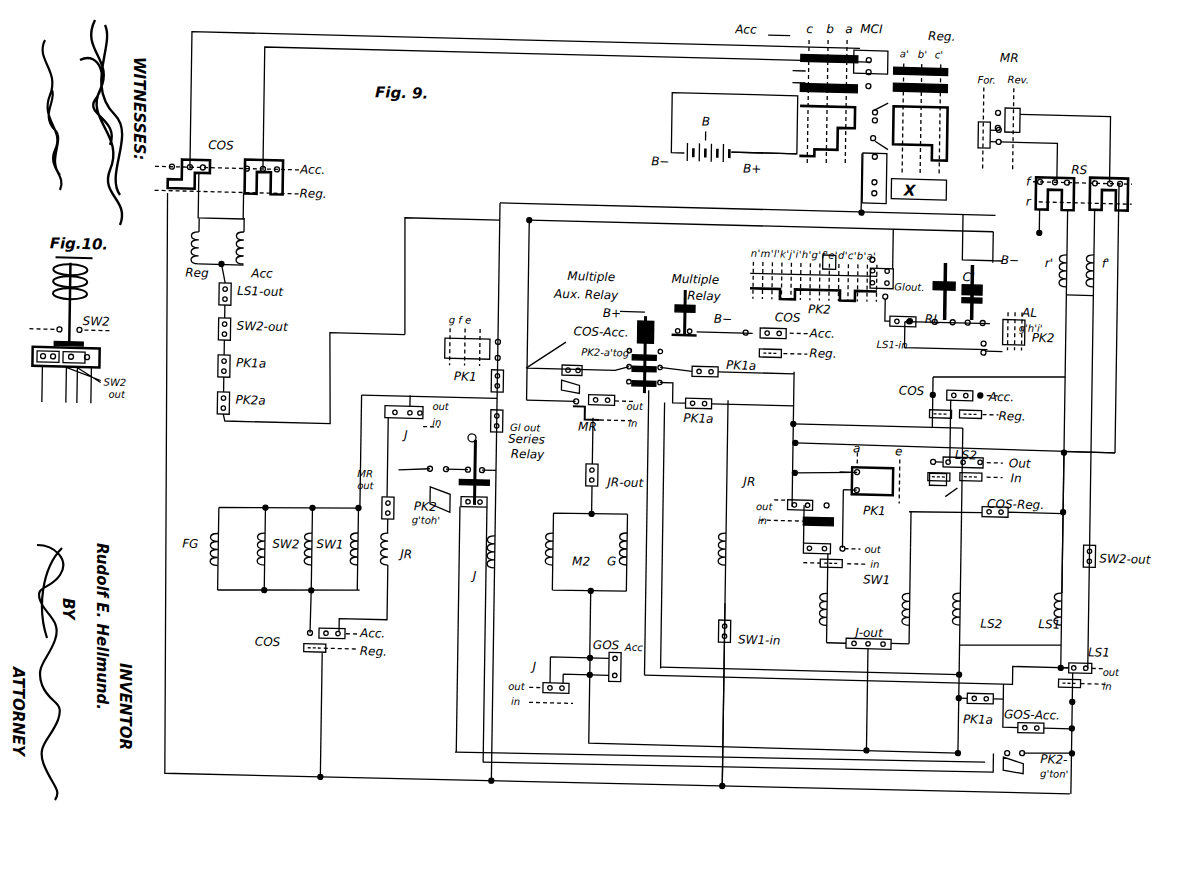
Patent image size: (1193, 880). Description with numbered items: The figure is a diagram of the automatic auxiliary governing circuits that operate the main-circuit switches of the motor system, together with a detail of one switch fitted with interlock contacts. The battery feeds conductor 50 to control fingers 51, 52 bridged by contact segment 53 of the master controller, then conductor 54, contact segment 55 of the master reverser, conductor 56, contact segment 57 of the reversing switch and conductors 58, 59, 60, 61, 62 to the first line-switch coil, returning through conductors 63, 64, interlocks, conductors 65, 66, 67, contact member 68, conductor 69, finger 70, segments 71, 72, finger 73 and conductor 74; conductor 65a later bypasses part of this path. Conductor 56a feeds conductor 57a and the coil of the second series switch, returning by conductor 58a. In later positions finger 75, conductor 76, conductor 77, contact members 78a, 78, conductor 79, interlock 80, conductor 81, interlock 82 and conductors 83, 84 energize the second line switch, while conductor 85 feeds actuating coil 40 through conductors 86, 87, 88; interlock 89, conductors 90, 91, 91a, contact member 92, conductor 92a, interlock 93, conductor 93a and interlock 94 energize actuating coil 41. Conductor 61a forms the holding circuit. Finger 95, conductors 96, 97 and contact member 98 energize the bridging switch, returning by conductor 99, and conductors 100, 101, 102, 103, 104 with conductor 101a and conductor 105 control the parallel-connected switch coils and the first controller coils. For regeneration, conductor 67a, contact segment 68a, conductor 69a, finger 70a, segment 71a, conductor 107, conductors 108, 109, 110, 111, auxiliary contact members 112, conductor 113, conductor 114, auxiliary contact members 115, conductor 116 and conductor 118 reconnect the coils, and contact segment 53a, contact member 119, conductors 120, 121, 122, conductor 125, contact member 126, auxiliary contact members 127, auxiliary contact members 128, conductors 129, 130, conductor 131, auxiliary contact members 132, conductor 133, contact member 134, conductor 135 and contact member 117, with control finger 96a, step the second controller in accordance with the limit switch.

The actuating coil 40 is at (578, 580).
The actuating coil 41 is at (706, 525).
The conductor 50 is at (753, 151).
The control finger 51 is at (869, 117).
The control finger 52 is at (889, 102).
The contact segment 53 is at (827, 131).
The contact segment 53a is at (920, 133).
The conductor 54 is at (972, 112).
The contact segment 55 is at (973, 135).
The conductor 56 is at (1053, 132).
The conductor 56a is at (401, 264).
The contact segment 57 is at (1054, 205).
The conductor 57a is at (373, 452).
The conductor 58 is at (1028, 214).
The conductor 58a is at (326, 723).
The conductor 59 is at (1098, 205).
The conductor 60 is at (1117, 277).
The conductor 61 is at (1064, 467).
The conductor 61a is at (1050, 441).
The conductor 62 is at (1064, 533).
The conductor 63 is at (1022, 632).
The conductor 64 is at (962, 649).
The conductor 65 is at (1078, 741).
The conductor 65a is at (1078, 716).
The negative conductor 66 is at (164, 449).
The conductor 67 is at (236, 220).
The conductor 67a is at (372, 336).
The contact member 68 is at (268, 164).
The contact segment 68a is at (188, 189).
The conductor 69 is at (258, 113).
The conductor 69a is at (184, 85).
The control finger 70 is at (844, 61).
The control finger 70a is at (860, 75).
The contact segment 71 is at (793, 71).
The contact segment 71a is at (942, 68).
The contact segment 72 is at (793, 84).
The control finger 73 is at (835, 94).
The conductor 74 is at (732, 90).
The control finger 75 is at (891, 152).
The conductor 76 is at (892, 220).
The conductor 77 is at (877, 308).
The auxiliary contact members 78 is at (990, 300).
The auxiliary contact members 78a is at (945, 337).
The conductor 79 is at (983, 337).
The interlock 80 is at (931, 392).
The conductor 81 is at (950, 438).
The interlock 82 is at (946, 498).
The conductor 83 is at (955, 500).
The conductor 84 is at (962, 546).
The conductor 85 is at (952, 507).
The conductor 86 is at (871, 714).
The conductor 87 is at (903, 751).
The conductor 88 is at (962, 714).
The interlock 89 is at (930, 482).
The conductor 90 is at (878, 446).
The conductor 91 is at (793, 463).
The conductor 91a is at (841, 467).
The contact member 92 is at (872, 481).
The conductor 92a is at (843, 490).
The interlock 93 is at (835, 516).
The conductor 93a is at (794, 527).
The interlock 94 is at (824, 542).
The control finger 95 is at (874, 178).
The conductor 96 is at (855, 186).
The control finger 96a is at (872, 255).
The conductor 97 is at (691, 194).
The contact member 98 is at (468, 347).
The conductor 99 is at (497, 651).
The conductor 100 is at (792, 417).
The conductor 101 is at (762, 366).
The conductor 101a is at (567, 402).
The conductor 102 is at (595, 451).
The conductor 103 is at (593, 628).
The conductor 104 is at (598, 735).
The conductor 105 is at (795, 471).
The conductor 107 is at (313, 626).
The conductor 108 is at (525, 260).
The conductor 109 is at (578, 363).
The conductor 110 is at (597, 380).
The conductor 111 is at (634, 346).
The auxiliary contact members 112 is at (650, 359).
The conductor 113 is at (694, 334).
The conductor 114 is at (947, 677).
The auxiliary contact members 115 is at (662, 391).
The conductor 116 is at (668, 466).
The contact member 117 is at (1024, 337).
The conductor 118 is at (998, 404).
The contact member 119 is at (813, 290).
The conductor 120 is at (983, 413).
The conductor 121 is at (727, 478).
The conductor 122 is at (726, 712).
The conductor 125 is at (430, 471).
The contact member 126 is at (431, 490).
The auxiliary contact members 127 is at (490, 482).
The auxiliary contact members 128 is at (655, 381).
The conductor 129 is at (695, 362).
The conductor 130 is at (724, 396).
The conductor 131 is at (989, 751).
The auxiliary contact members 132 is at (486, 512).
The conductor 133 is at (461, 600).
The contact member 134 is at (1017, 765).
The conductor 135 is at (1042, 745).